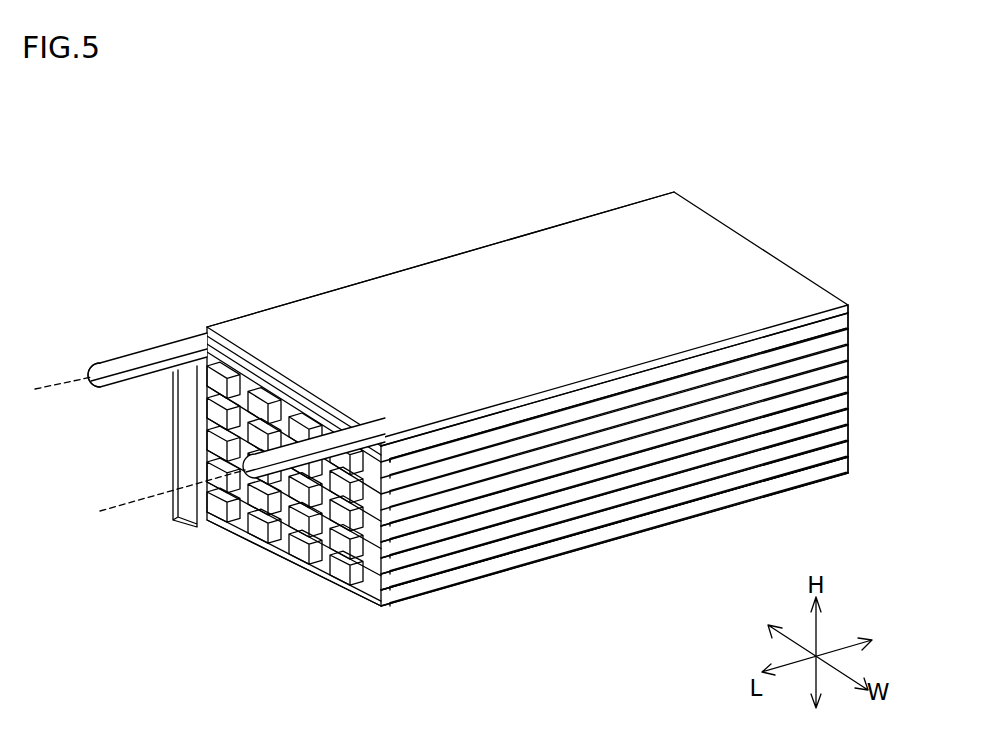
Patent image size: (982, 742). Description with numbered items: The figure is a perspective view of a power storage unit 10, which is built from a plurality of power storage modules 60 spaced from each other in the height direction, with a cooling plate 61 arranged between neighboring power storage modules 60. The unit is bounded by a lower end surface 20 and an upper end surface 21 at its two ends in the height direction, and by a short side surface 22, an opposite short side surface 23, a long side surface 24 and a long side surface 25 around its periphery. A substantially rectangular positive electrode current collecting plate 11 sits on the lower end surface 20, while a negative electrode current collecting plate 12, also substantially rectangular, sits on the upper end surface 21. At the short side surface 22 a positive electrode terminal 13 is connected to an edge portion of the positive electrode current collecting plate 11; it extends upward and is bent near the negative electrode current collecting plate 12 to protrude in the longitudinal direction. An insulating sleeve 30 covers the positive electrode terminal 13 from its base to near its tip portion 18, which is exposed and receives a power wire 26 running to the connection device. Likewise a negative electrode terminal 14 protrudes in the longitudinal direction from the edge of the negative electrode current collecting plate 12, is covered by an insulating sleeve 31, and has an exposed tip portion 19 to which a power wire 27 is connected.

The power storage unit 10 is at (700, 155).
The positive electrode current collecting plate 11 is at (457, 583).
The negative electrode current collecting plate 12 is at (528, 262).
The positive electrode terminal 13 is at (106, 326).
The negative electrode terminal 14 is at (294, 506).
The tip portion 18 is at (100, 375).
The tip portion 19 is at (257, 478).
The lower end surface 20 is at (538, 557).
The upper end surface 21 is at (766, 337).
The short side surface 22 is at (205, 416).
The short side surface 23 is at (848, 327).
The long side surface 24 is at (786, 462).
The long side surface 25 is at (446, 236).
The power wire 26 is at (56, 378).
The power wire 27 is at (101, 510).
The insulating sleeve 30 is at (160, 357).
The insulating sleeve 31 is at (300, 470).
The power storage module 60 is at (598, 533).
The cooling plate 61 is at (640, 522).